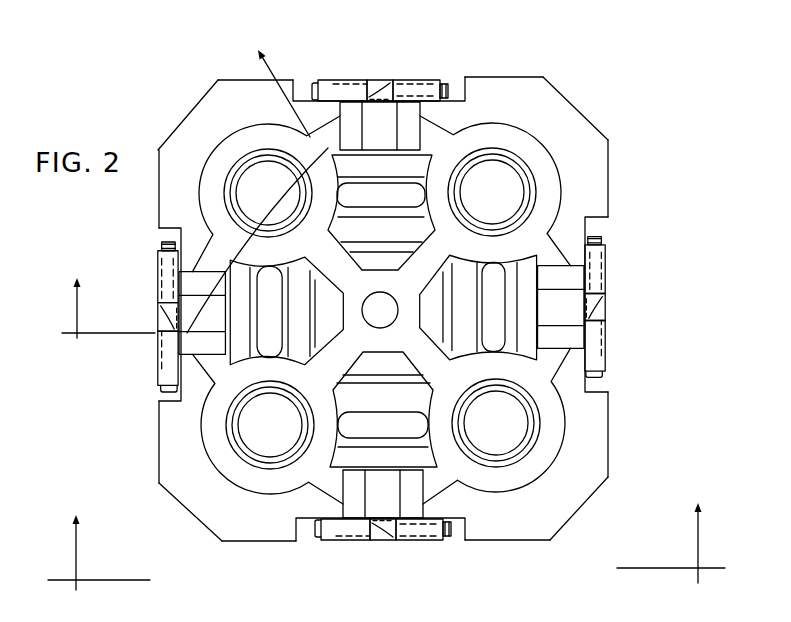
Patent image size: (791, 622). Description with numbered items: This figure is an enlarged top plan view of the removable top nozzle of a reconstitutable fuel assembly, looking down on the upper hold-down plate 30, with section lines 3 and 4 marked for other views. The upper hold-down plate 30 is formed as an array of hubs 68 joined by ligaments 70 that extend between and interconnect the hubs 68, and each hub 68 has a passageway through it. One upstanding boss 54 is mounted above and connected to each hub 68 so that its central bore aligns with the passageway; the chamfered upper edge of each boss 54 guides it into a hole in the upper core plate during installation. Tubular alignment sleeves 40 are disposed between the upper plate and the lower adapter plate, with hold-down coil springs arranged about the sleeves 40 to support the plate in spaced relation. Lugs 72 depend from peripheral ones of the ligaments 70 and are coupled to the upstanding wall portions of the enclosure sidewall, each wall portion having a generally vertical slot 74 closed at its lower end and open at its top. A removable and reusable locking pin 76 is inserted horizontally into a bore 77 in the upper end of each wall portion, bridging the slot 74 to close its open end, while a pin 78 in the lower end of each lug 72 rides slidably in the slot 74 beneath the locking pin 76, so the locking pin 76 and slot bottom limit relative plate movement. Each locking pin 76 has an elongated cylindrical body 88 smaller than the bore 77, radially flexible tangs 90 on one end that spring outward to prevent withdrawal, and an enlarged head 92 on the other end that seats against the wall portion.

The upper hold-down plate 30 is at (563, 160).
The tubular alignment sleeves 40 is at (227, 197).
The upstanding bosses 54 is at (250, 167).
The hubs 68 is at (240, 163).
The ligaments 70 is at (502, 121).
The lugs 72 is at (468, 95).
The vertical slot 74 is at (383, 84).
The locking pin 76 is at (392, 80).
The bore 77 is at (345, 80).
The pin 78 is at (380, 80).
The elongated cylindrical body 88 is at (374, 79).
The radially flexible tangs 90 is at (446, 85).
The enlarged head 92 is at (313, 86).
The section line 3- 3 is at (386, 546).
The section line 4- 4 is at (195, 182).